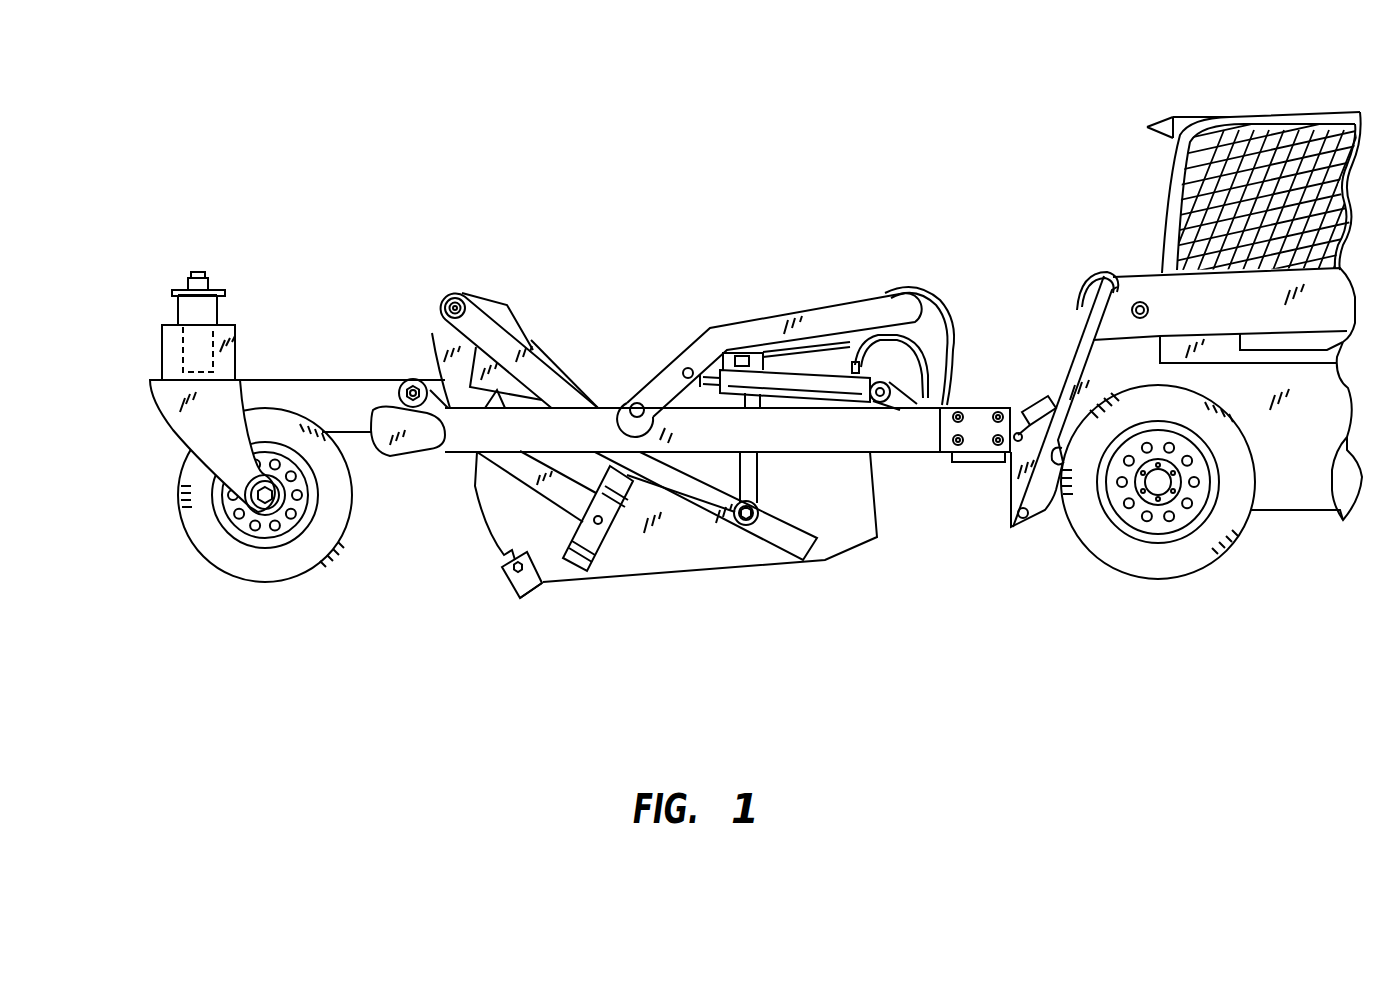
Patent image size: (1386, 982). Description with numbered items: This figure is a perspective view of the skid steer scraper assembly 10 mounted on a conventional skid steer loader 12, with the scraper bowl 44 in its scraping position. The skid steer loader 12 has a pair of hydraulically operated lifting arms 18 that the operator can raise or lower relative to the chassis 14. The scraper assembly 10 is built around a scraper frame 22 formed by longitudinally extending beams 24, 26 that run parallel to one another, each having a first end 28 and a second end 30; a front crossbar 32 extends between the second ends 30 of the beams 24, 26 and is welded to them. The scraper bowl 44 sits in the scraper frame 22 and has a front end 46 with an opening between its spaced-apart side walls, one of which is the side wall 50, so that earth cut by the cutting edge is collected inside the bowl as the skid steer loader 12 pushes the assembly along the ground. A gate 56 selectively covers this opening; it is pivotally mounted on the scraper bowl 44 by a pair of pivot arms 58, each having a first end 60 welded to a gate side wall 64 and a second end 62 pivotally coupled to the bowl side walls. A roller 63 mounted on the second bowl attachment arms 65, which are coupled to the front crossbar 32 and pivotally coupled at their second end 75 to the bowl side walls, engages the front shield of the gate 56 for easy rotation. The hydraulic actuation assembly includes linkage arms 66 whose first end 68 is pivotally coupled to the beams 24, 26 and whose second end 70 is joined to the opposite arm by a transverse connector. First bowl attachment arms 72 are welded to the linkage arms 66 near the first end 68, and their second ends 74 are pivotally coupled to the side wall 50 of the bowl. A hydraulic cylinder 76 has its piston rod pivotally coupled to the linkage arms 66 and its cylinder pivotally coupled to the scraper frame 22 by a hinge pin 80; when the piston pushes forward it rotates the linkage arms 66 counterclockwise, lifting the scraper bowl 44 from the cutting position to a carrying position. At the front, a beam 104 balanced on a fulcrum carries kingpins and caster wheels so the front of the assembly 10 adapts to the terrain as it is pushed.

The scraper assembly 10 is at (718, 208).
The skid steer loader 12 is at (1167, 118).
The chassis 14 is at (1297, 485).
The lifting arms 18 is at (1103, 390).
The scraper frame 22 is at (777, 421).
The beam 24 is at (815, 430).
The beam 26 is at (927, 402).
The first end 28 is at (987, 427).
The second end 30 is at (453, 447).
The front crossbar 32 is at (387, 417).
The scraper bowl 44 is at (513, 537).
The front end 46 is at (520, 598).
The side wall 50 is at (695, 547).
The gate 56 is at (452, 290).
The pivot arms 58 is at (538, 333).
The first end 60 is at (450, 298).
The second end 62 is at (558, 382).
The roller 63 is at (415, 380).
The gate side wall 64 is at (442, 350).
The second bowl attachment arms 65 is at (513, 479).
The linkage arms 66 is at (748, 333).
The first end 68 is at (645, 382).
The second end 70 is at (905, 304).
The first bowl attachment arms 72 is at (810, 458).
The second ends 74 is at (752, 528).
The second end 75 is at (610, 523).
The hydraulic cylinder 76 is at (847, 387).
The hinge pin 80 is at (905, 402).
The beam 104 is at (182, 345).